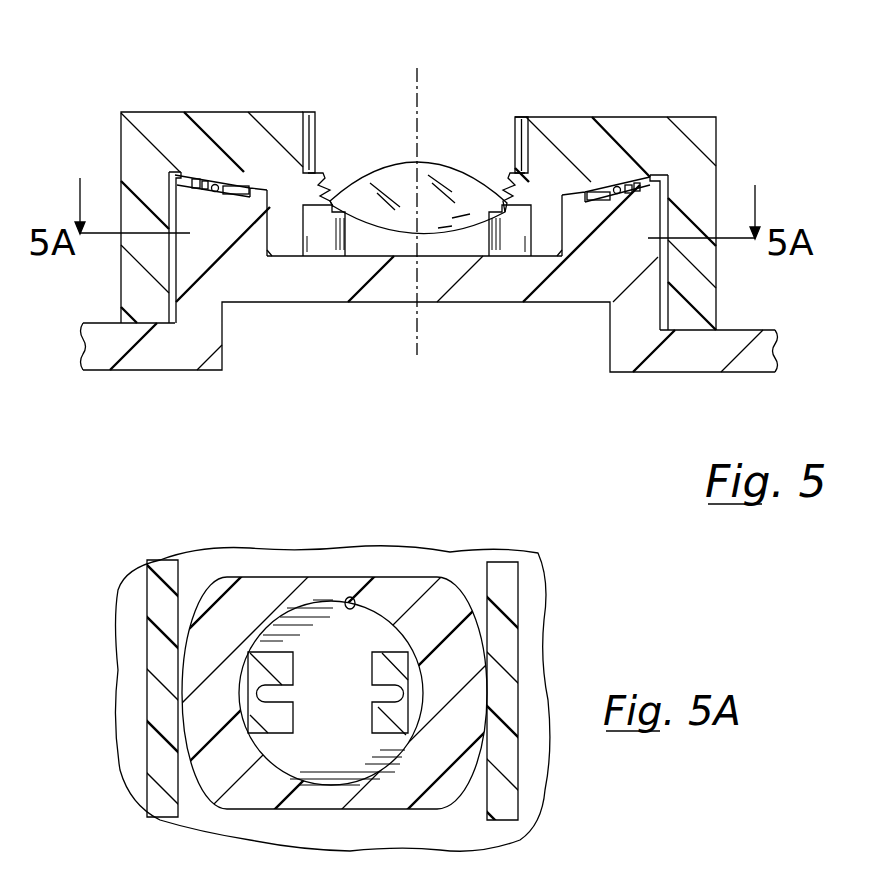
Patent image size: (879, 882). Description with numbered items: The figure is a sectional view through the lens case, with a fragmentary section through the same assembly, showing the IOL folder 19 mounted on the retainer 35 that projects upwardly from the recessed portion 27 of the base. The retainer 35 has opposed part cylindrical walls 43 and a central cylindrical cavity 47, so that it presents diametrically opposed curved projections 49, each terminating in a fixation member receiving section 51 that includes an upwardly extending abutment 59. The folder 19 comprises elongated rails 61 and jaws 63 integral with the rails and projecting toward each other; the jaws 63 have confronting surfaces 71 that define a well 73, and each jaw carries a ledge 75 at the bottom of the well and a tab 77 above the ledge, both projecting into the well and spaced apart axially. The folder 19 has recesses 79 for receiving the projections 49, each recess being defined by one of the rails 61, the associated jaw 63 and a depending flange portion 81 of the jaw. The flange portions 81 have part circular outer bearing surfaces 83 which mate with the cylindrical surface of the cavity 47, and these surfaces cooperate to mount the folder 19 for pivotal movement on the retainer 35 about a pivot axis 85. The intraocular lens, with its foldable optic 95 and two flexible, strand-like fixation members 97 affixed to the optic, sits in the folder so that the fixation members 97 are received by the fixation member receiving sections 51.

In FIG. 5, the IOL folder 19 is at (148, 108).
In FIG. 5, the recessed portion 27 is at (780, 357).
In FIG. 5, the retainer 35 is at (626, 253).
In FIG. 5A, the retainer 35 is at (442, 739).
In FIG. 5, the part cylindrical walls 43 is at (160, 290).
In FIG. 5, the central cylindrical cavity 47 is at (266, 241).
In FIG. 5A, the central cylindrical cavity 47 is at (353, 598).
In FIG. 5, the curved projections 49 is at (187, 197).
In FIG. 5, the fixation member receiving sections 51 is at (200, 180).
In FIG. 5, the abutment 59 is at (264, 190).
In FIG. 5, the elongated rails 61 is at (130, 163).
In FIG. 5A, the elongated rails 61 is at (157, 586).
In FIG. 5, the jaws 63 is at (247, 100).
In FIG. 5, the confronting surfaces 71 is at (311, 111).
In FIG. 5, the well 73 is at (352, 135).
In FIG. 5, the ledge 75 is at (330, 245).
In FIG. 5A, the ledge 75 is at (293, 714).
In FIG. 5, the tab 77 is at (345, 160).
In FIG. 5, the recesses 79 is at (176, 170).
In FIG. 5, the depending flange portion 81 is at (301, 236).
In FIG. 5, the outer bearing surfaces 83 is at (267, 240).
In FIG. 5A, the outer bearing surfaces 83 is at (236, 690).
In FIG. 5, the pivot axis 85 is at (422, 78).
In FIG. 5, the optic 95 is at (440, 163).
In FIG. 5, the fixation members 97 is at (227, 182).